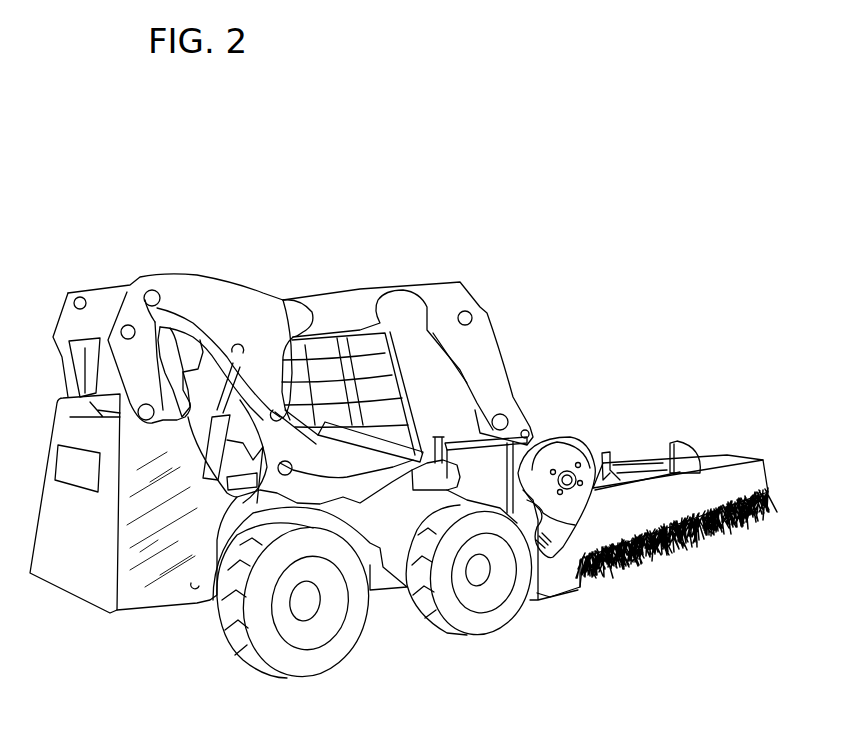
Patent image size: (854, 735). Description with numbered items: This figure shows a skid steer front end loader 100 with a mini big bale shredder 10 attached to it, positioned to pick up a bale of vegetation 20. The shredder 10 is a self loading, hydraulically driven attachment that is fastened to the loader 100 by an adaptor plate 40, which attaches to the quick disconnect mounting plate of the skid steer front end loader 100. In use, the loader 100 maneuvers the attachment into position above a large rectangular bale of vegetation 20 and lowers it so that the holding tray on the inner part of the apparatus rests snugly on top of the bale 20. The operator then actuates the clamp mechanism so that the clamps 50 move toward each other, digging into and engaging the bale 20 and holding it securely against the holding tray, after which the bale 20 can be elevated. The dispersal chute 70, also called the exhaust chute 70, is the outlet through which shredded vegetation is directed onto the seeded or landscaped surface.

The skid steer front end loader 100 is at (190, 252).
The mini big bale shredder 10 is at (657, 430).
The dispersal chute 70 is at (553, 438).
The adaptor plate 40 is at (467, 436).
The clamps 50 is at (700, 455).
The bale of vegetation 20 is at (716, 529).